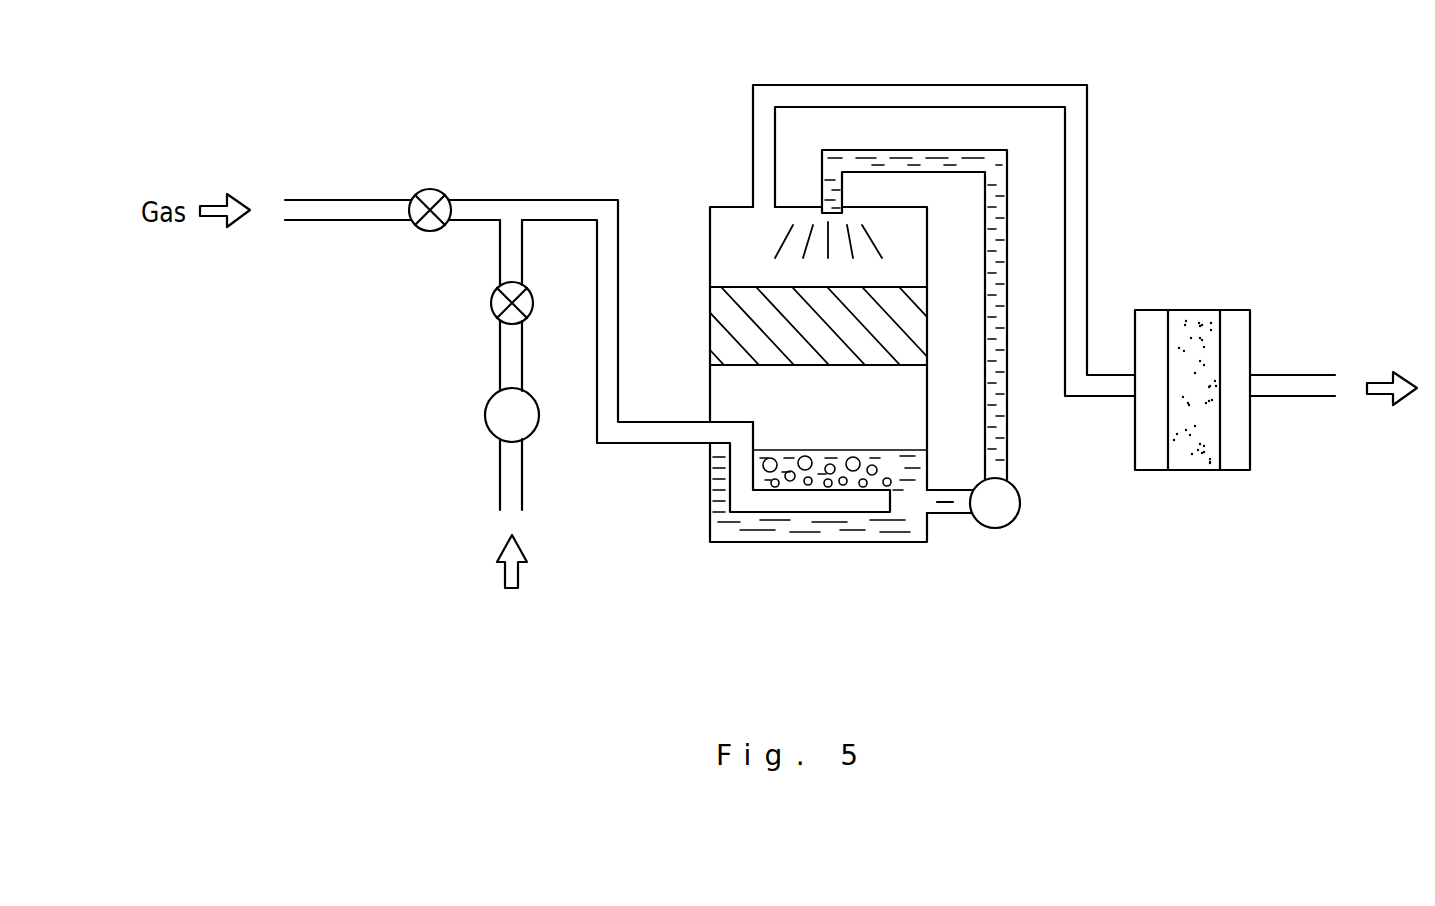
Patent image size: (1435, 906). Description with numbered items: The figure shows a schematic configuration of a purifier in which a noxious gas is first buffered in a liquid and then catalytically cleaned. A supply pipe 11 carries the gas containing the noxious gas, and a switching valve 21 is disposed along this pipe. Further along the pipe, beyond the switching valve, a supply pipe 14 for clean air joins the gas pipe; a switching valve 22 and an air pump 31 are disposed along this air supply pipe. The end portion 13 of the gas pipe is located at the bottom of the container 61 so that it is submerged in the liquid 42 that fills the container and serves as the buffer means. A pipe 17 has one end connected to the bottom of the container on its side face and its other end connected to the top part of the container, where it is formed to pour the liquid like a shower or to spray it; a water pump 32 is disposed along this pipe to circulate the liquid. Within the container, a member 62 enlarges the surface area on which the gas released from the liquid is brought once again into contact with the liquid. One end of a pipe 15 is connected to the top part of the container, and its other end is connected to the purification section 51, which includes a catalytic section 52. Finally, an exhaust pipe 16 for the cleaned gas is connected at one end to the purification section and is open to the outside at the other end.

The supply pipe 11 is at (351, 200).
The switching valve 21 is at (444, 198).
The switching valve 22 is at (533, 312).
The air pump 31 is at (539, 423).
The supply pipe 14 is at (523, 491).
The end portion 13 is at (786, 503).
The liquid 42 is at (875, 527).
The container 61 is at (927, 265).
The member 62 is at (892, 342).
The pipe 15 is at (995, 85).
The pipe 17 is at (1007, 392).
The water pump 32 is at (1014, 519).
The purification section 51 is at (1153, 310).
The catalytic section 52 is at (1197, 310).
The exhaust pipe 16 is at (1303, 375).